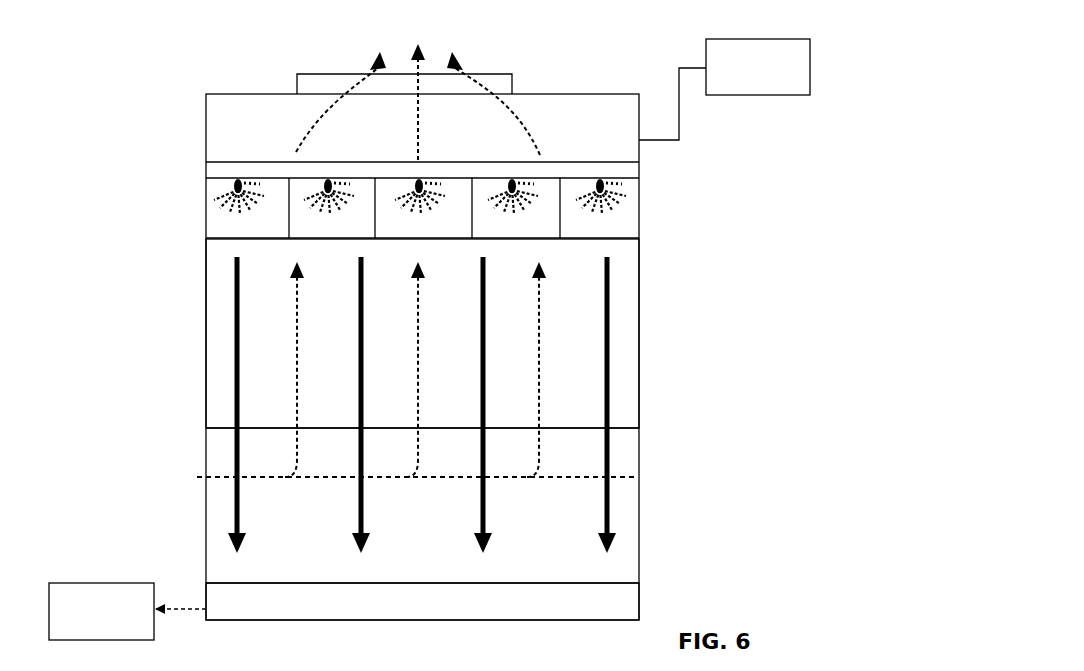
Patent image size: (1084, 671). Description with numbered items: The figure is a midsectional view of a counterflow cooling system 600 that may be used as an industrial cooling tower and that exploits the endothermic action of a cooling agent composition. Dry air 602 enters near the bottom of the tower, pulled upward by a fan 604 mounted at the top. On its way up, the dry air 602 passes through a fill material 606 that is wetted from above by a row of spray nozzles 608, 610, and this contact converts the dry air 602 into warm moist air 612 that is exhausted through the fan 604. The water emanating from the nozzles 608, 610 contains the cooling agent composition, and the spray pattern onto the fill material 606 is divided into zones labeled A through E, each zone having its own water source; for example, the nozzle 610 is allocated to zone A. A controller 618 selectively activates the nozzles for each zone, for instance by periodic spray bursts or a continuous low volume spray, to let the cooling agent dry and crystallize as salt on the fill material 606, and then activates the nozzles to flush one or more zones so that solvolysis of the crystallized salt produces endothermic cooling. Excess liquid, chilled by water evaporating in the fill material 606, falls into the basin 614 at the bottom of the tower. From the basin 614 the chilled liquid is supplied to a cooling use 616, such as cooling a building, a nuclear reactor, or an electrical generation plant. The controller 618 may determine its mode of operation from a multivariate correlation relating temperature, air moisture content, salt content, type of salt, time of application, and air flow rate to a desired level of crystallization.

The counterflow cooling system 600 is at (203, 172).
The dry air 602 is at (294, 461).
The fan 604 is at (512, 73).
The fill material 606 is at (631, 354).
The spray nozzles 608 is at (608, 181).
The spray nozzle 610 is at (236, 186).
The warm moist air 612 is at (372, 60).
The basin 614 is at (634, 598).
The cooling use 616 is at (128, 583).
The controller 618 is at (810, 73).